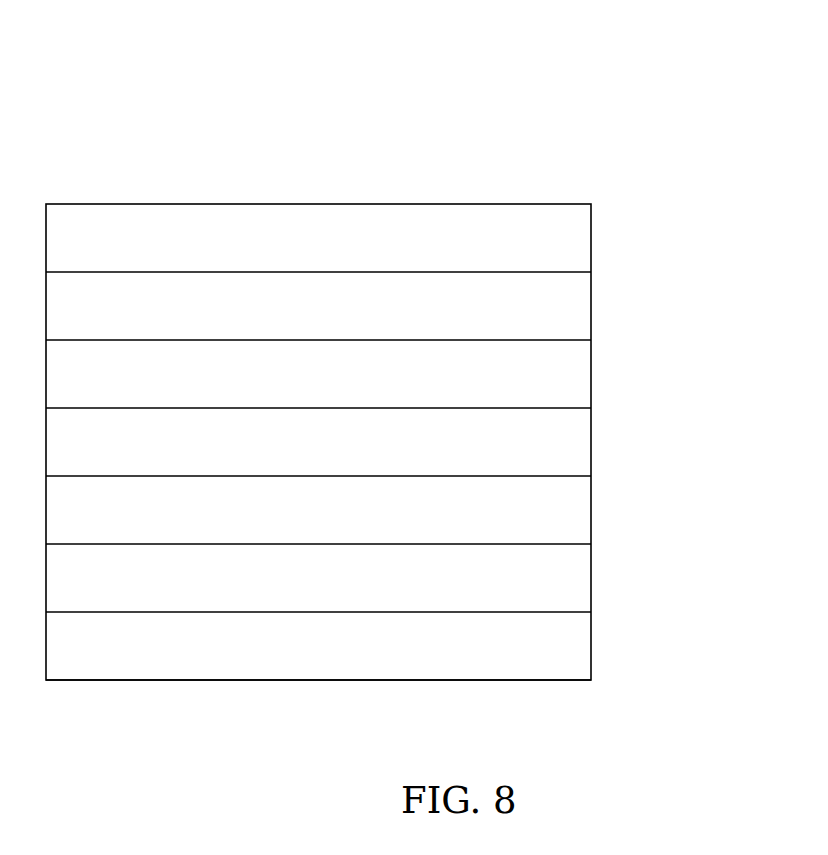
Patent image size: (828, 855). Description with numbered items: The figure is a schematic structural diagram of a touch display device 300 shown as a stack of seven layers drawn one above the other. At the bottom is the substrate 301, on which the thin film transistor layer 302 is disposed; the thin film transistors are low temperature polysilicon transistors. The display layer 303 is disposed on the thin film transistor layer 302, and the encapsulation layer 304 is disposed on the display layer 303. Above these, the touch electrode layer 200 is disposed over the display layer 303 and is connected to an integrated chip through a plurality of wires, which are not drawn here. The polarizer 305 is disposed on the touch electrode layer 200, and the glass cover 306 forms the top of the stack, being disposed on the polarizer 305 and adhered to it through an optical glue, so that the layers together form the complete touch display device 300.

The touch display device 300 is at (363, 67).
The substrate 301 is at (566, 658).
The thin film transistor layer 302 is at (566, 590).
The display layer 303 is at (566, 522).
The encapsulation layer 304 is at (566, 454).
The touch electrode layer 200 is at (566, 386).
The polarizer 305 is at (566, 318).
The glass cover 306 is at (566, 250).